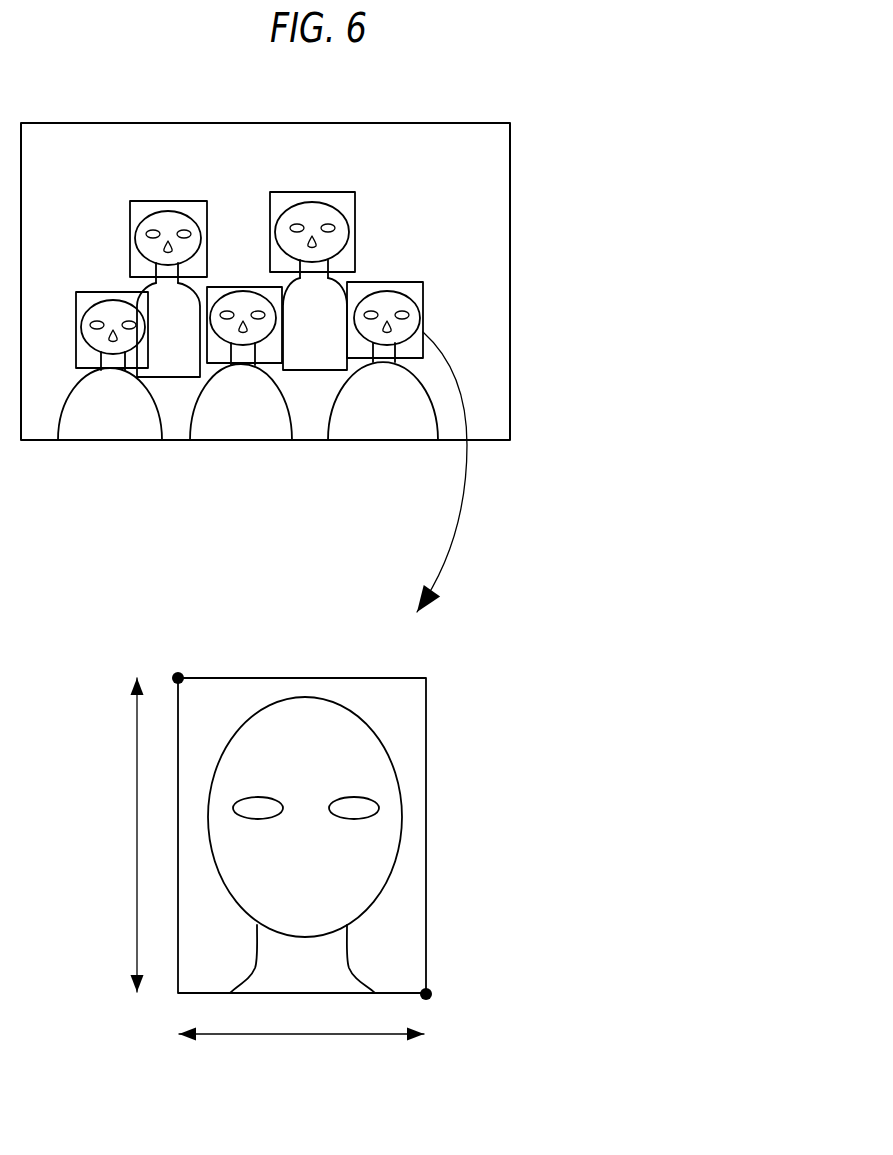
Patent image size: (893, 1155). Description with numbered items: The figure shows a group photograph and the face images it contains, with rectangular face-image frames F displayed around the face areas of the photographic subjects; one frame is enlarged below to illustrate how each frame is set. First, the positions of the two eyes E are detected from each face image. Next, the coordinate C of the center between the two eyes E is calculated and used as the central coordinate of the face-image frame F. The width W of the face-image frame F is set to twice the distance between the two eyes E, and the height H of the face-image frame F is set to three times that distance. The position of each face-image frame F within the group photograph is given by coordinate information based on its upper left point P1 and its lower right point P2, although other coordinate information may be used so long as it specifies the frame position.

The face-image frame F is at (360, 211).
The coordinate of the center between the two eyes C is at (305, 801).
The eyes E is at (260, 818).
The height of the face-image frame H is at (135, 824).
The width of the face-image frame W is at (308, 1037).
The upper left point P1 is at (211, 664).
The lower right point P2 is at (476, 999).